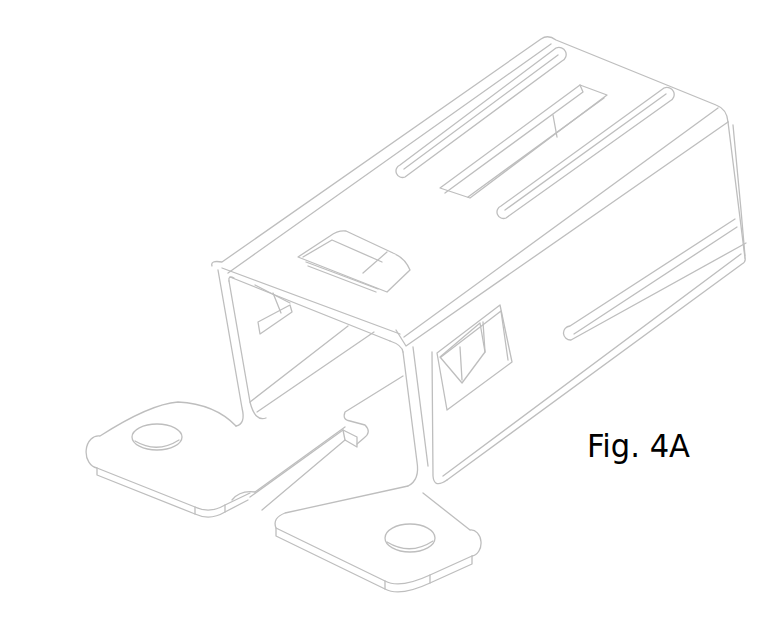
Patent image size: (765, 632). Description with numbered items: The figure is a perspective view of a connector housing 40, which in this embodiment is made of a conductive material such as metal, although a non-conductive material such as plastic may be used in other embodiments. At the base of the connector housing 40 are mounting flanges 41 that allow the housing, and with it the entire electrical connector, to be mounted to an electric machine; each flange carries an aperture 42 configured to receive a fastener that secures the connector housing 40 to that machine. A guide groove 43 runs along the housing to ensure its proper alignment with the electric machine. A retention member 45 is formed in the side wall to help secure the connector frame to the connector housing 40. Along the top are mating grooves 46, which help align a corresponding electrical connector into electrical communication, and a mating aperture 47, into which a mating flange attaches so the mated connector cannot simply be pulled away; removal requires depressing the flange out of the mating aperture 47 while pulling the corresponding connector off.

The connector housing 40 is at (387, 308).
The mounting flanges 41 is at (295, 497).
The apertures 42 is at (138, 368).
The guide groove 43 is at (282, 513).
The retention member 45 is at (388, 400).
The mating grooves 46 is at (571, 179).
The mating aperture 47 is at (480, 129).